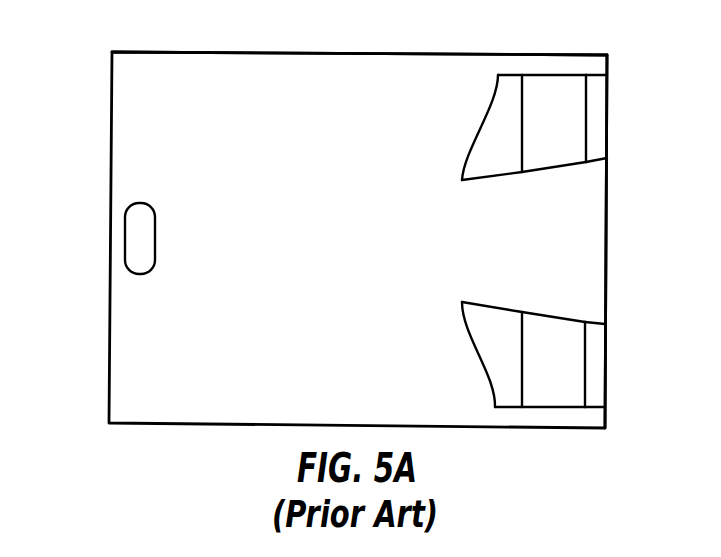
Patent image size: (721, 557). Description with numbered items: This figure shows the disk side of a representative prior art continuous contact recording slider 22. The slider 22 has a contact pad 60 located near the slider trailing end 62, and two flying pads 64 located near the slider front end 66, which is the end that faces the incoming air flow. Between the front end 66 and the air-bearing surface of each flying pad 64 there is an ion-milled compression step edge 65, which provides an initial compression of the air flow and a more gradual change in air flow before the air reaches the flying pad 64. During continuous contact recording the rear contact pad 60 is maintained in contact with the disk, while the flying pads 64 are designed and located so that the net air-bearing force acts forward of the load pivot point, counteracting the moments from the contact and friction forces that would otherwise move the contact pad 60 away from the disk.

The slider 22 is at (375, 53).
The contact pad 60 is at (157, 223).
The slider trailing end 62 is at (111, 125).
The flying pad 64 is at (558, 137).
The compression step edge 65 is at (595, 88).
The slider front end 66 is at (605, 198).